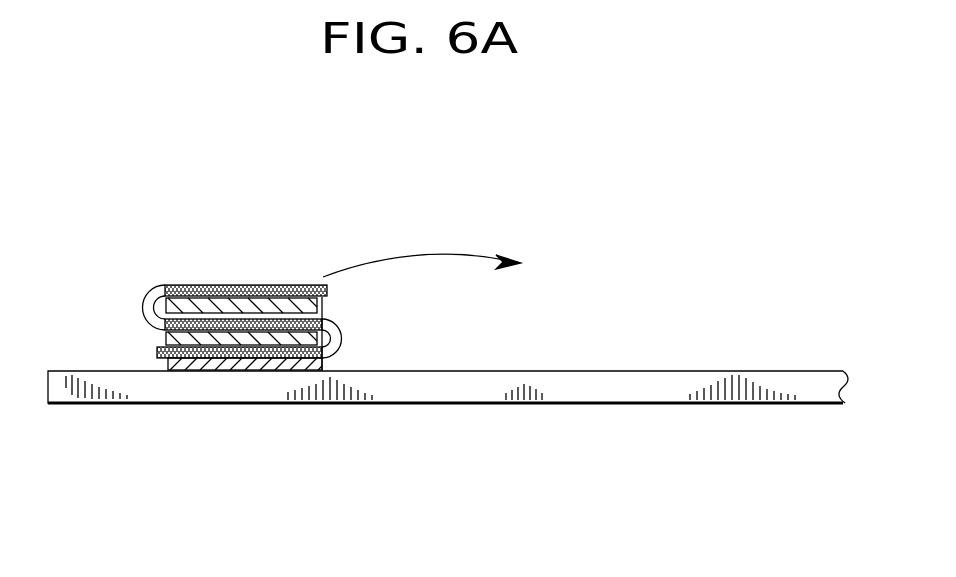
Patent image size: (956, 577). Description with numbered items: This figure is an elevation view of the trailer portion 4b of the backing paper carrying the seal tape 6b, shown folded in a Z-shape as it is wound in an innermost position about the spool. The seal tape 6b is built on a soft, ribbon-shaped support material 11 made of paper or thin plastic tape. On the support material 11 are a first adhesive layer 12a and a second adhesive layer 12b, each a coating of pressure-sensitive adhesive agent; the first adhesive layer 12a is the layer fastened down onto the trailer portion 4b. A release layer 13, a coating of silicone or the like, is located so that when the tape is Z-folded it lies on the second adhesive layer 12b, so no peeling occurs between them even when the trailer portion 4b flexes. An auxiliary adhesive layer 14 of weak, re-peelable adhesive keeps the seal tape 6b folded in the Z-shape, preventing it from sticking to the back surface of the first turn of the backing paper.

The seal tape 6b is at (271, 228).
The trailer portion 4b is at (667, 392).
The first adhesive layer 12a is at (253, 363).
The second adhesive layer 12b is at (328, 299).
The support material 11 is at (341, 331).
The release layer 13 is at (146, 318).
The auxiliary adhesive layer 14 is at (160, 339).